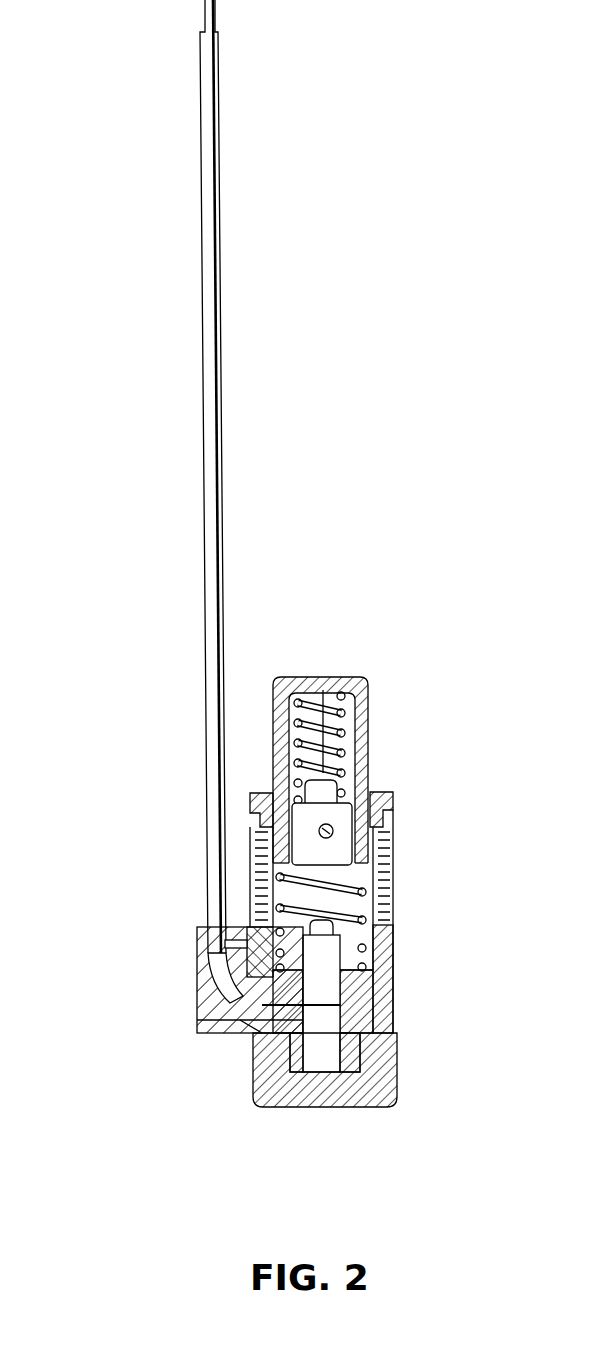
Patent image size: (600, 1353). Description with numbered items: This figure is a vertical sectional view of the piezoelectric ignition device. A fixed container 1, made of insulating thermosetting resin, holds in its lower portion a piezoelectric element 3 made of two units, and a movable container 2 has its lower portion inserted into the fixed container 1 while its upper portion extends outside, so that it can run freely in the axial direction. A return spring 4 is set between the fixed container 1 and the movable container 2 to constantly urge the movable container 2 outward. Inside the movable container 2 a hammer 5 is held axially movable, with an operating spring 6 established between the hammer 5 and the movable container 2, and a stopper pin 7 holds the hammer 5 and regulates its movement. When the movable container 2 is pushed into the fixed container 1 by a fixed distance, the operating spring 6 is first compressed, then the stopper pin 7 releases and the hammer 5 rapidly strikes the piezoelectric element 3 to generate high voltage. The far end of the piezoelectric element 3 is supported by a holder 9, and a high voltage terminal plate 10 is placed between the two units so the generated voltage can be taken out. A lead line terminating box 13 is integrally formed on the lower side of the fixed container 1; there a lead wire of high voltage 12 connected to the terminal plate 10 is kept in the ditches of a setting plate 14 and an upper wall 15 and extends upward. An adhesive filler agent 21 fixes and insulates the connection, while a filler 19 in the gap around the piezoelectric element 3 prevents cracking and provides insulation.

The fixed container 1 is at (390, 967).
The movable container 2 is at (364, 713).
The piezoelectric element 3 is at (335, 990).
The return spring 4 is at (378, 913).
The hammer 5 is at (323, 858).
The operating spring 6 is at (350, 765).
The stopper pin 7 is at (333, 834).
The holder 9 is at (378, 1085).
The high voltage terminal plate 10 is at (250, 1035).
The lead wire of high voltage 12 is at (205, 618).
The lead line terminating box 13 is at (213, 1033).
The setting plate 14 is at (222, 962).
The upper wall 15 is at (242, 930).
The filler 19 is at (288, 1033).
The adhesive filler agent 21 is at (207, 1003).